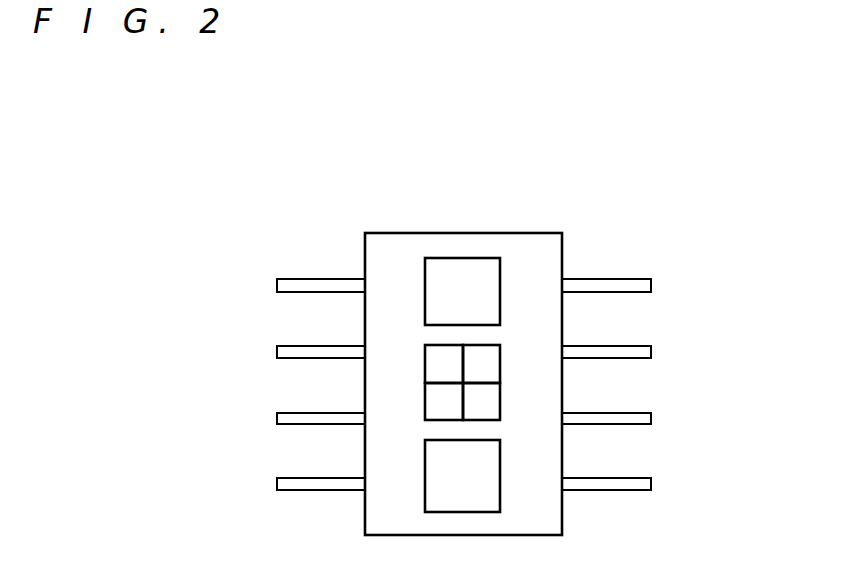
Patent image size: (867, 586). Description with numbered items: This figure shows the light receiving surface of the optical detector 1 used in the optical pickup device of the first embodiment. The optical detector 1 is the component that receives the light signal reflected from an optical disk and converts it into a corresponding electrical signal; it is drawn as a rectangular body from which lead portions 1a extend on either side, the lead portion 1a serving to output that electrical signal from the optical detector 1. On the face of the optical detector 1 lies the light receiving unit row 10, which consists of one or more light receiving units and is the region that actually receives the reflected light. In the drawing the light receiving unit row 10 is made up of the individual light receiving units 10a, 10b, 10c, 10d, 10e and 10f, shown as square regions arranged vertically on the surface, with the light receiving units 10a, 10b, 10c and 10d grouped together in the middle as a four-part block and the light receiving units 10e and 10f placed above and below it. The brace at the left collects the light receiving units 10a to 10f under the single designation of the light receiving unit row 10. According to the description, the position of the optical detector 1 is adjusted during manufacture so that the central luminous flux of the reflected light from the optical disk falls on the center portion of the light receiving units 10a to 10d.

The optical detector 1 is at (543, 250).
The lead portion 1a is at (640, 287).
The light receiving unit row 10 is at (195, 220).
The light receiving unit 10a is at (487, 353).
The light receiving unit 10b is at (486, 410).
The light receiving unit 10c is at (440, 397).
The light receiving unit 10d is at (438, 363).
The light receiving unit 10e is at (438, 277).
The light receiving unit 10f is at (443, 483).